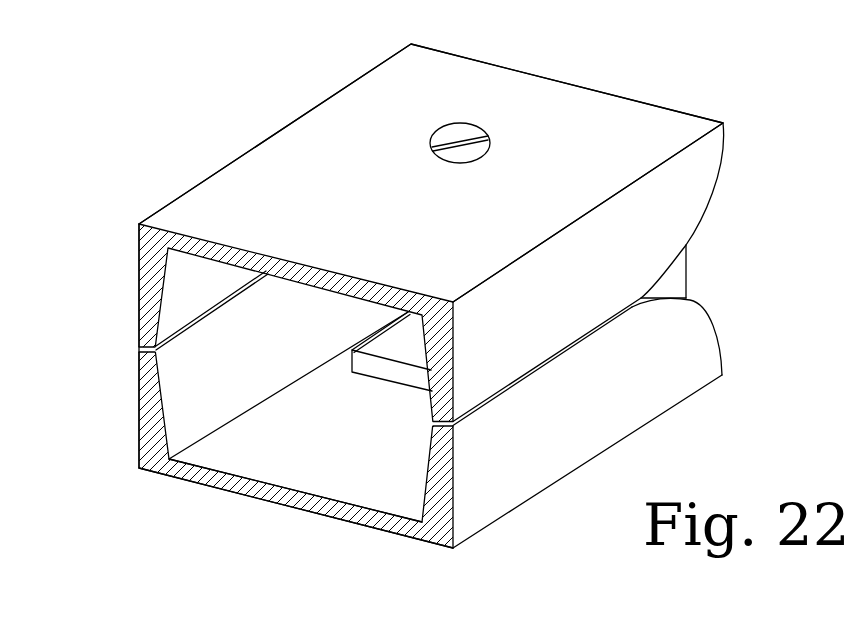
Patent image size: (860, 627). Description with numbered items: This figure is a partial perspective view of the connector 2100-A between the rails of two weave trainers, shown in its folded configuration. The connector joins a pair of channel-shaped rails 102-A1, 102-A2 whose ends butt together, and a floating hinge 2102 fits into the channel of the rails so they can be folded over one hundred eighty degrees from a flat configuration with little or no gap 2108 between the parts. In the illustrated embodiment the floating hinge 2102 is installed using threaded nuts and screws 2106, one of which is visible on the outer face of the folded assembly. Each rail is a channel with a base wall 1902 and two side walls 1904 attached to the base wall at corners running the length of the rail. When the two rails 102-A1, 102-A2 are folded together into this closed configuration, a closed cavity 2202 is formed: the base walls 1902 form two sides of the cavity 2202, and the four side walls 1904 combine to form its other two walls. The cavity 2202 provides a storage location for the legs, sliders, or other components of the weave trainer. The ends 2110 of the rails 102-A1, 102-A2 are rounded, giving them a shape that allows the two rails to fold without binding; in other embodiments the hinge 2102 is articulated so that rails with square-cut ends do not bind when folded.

The rail 102-A2 is at (199, 184).
The base wall 1902 is at (600, 147).
The screw 2106 is at (462, 163).
The end 2110 is at (709, 197).
The connector 2100-A is at (686, 280).
The gap 2108 is at (722, 375).
The side wall 1904 is at (139, 268).
The floating hinge 2102 is at (398, 387).
The rail 102-A1 is at (245, 497).
The cavity 2202 is at (370, 508).